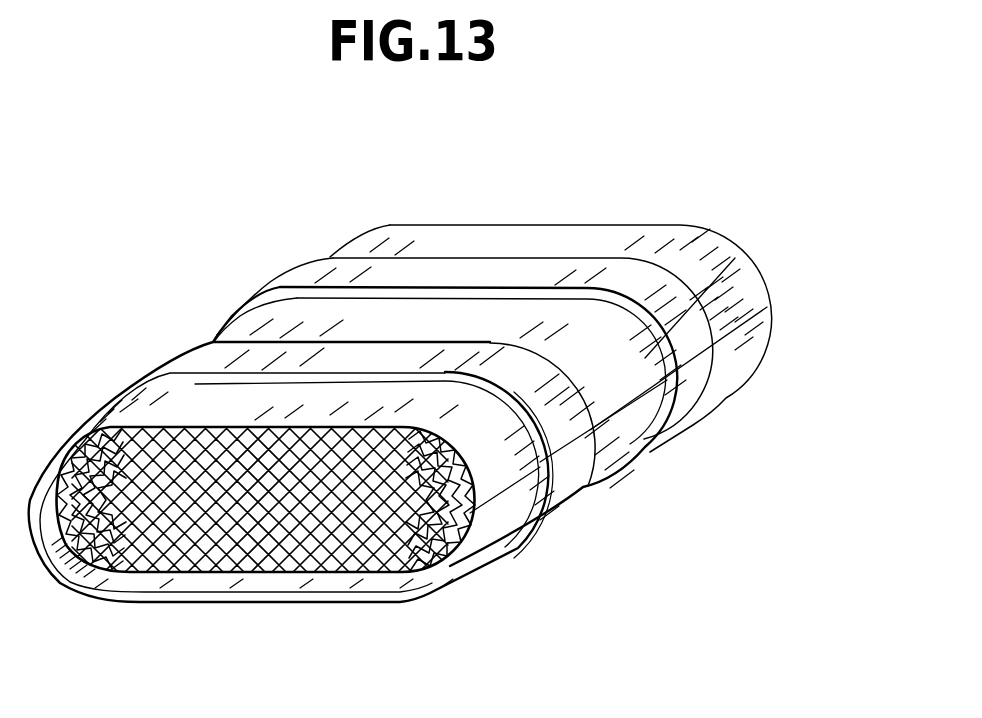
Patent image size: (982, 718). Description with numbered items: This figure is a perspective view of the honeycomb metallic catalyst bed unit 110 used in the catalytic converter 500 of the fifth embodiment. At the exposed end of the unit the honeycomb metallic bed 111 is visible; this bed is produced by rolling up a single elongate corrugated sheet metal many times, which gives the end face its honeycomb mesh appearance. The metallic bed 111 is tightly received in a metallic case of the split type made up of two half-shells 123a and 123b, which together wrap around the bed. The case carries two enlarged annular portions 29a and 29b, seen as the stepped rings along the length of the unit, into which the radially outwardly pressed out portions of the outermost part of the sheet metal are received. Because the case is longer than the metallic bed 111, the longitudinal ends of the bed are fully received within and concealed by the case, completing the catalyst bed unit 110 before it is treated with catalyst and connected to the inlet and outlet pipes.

The catalytic converter 500 is at (748, 122).
The honeycomb metallic catalyst bed unit 110 is at (614, 217).
The honeycomb metallic bed 111 is at (318, 515).
The half-shell 123a is at (738, 254).
The half-shell 123b is at (737, 357).
The enlarged annular portion 29a is at (563, 483).
The enlarged annular portion 29b is at (687, 412).